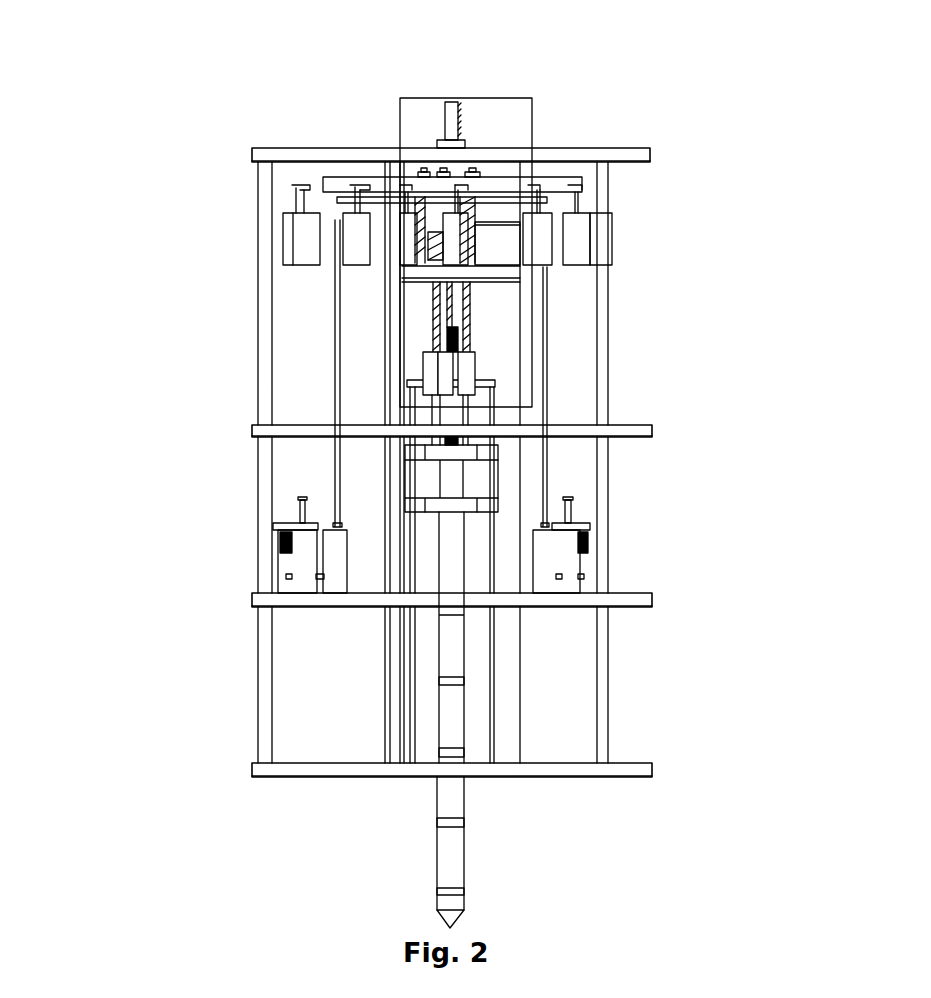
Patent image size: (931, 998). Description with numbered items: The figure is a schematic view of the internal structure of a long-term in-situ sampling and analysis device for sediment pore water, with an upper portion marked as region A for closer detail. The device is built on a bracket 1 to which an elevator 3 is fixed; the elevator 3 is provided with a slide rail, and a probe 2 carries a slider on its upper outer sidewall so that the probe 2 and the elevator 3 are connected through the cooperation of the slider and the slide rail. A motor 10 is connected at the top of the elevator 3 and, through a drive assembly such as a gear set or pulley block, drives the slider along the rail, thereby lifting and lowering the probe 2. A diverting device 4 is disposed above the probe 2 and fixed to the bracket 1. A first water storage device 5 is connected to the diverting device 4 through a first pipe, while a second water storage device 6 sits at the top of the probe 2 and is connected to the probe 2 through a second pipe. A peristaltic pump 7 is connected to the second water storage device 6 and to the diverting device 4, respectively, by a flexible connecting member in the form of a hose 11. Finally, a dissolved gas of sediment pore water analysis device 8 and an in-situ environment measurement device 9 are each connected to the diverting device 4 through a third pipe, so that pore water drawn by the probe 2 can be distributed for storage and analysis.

The detail region A is at (533, 98).
The bracket 1 is at (600, 192).
The probe 2 is at (466, 863).
The elevator 3 is at (413, 552).
The diverting device 4 is at (340, 178).
The first water storage device 5 is at (316, 236).
The second water storage device 6 is at (467, 363).
The peristaltic pump 7 is at (432, 248).
The dissolved gas of sediment pore water analysis device 8 is at (302, 577).
The in-situ environment measurement device 9 is at (567, 566).
The motor 10 is at (460, 338).
The hose 11 is at (430, 341).